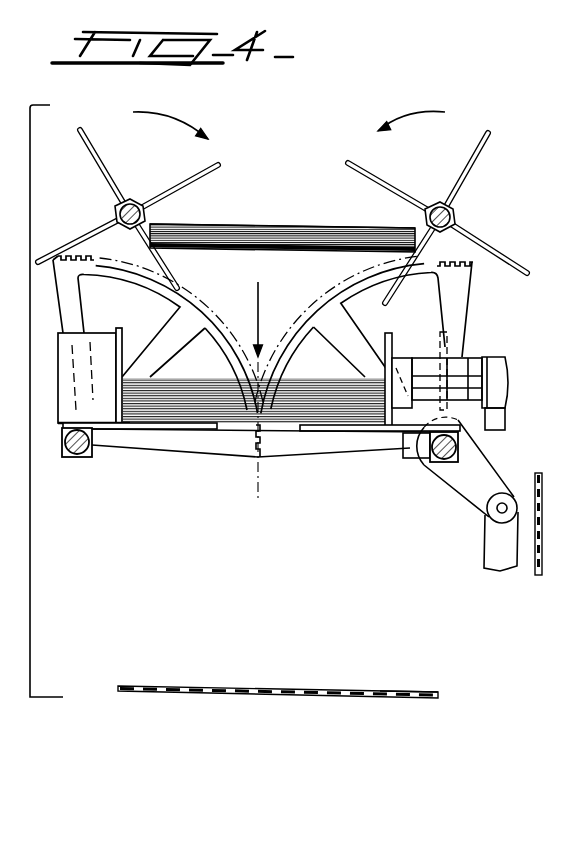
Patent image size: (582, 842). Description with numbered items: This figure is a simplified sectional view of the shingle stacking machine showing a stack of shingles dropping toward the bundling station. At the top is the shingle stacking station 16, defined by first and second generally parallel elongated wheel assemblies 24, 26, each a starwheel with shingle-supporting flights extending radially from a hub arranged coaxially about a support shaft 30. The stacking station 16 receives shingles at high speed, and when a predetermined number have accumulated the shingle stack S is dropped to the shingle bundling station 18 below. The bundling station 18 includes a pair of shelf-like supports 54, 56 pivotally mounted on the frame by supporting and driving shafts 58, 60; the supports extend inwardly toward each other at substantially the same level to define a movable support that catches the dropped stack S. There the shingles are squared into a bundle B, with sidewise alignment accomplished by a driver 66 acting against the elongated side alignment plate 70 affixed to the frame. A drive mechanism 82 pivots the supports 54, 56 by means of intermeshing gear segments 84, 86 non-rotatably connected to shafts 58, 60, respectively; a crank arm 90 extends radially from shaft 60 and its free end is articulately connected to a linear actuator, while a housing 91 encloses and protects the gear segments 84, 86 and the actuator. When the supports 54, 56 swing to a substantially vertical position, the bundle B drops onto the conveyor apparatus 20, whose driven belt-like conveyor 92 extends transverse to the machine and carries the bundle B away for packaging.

The shingle stacking station 16 is at (283, 217).
The shingle bundling station 18 is at (231, 437).
The conveyor apparatus 20 is at (146, 672).
The first wheel assembly 24 is at (107, 163).
The second wheel assembly 26 is at (488, 152).
The support shaft 30 is at (119, 217).
The shelf-like support 54 is at (127, 432).
The shelf-like support 56 is at (347, 433).
The supporting and driving shaft 58 is at (75, 455).
The supporting and driving shaft 60 is at (438, 455).
The driver 66 is at (516, 358).
The side alignment plate 70 is at (120, 363).
The drive mechanism 82 is at (470, 317).
The gear segment 84 is at (197, 322).
The gear segment 86 is at (320, 312).
The crank arm 90 is at (477, 473).
The housing 91 is at (537, 530).
The belt-like conveyor 92 is at (400, 692).
The shingle stack S is at (253, 232).
The shingle bundle B is at (207, 383).